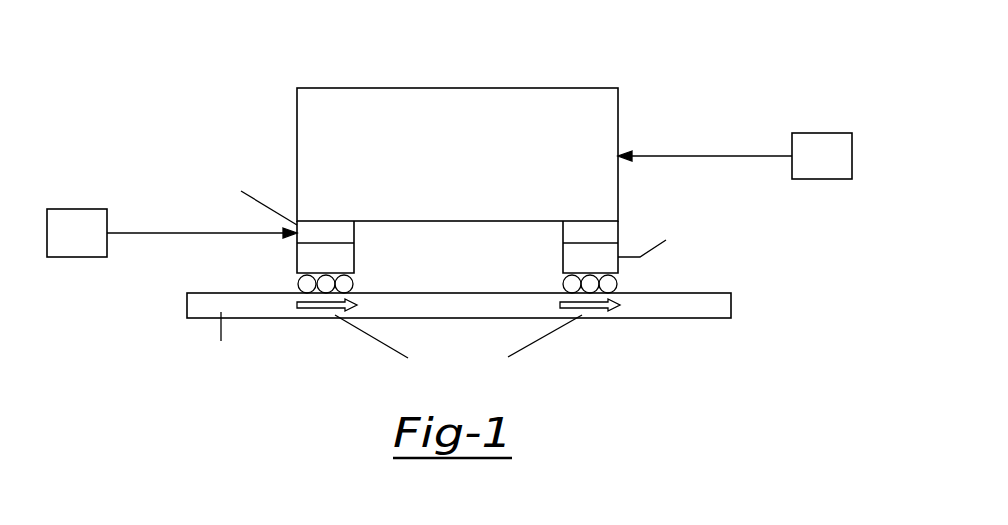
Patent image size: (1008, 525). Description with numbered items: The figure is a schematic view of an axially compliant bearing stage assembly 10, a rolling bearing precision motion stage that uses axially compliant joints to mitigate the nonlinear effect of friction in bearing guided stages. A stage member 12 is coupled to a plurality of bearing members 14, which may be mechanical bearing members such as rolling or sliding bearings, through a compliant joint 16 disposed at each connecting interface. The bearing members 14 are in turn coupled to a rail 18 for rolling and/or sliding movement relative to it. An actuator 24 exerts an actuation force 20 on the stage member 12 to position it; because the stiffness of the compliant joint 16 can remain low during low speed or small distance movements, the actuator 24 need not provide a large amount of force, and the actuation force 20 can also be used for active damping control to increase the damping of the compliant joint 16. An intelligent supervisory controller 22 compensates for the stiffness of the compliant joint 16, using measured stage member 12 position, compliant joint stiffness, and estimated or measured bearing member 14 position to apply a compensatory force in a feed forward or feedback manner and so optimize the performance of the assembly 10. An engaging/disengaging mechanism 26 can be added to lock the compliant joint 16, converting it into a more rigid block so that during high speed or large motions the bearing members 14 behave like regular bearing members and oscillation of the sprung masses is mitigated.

The axially compliant bearing stage assembly 10 is at (621, 59).
The stage member 12 is at (312, 88).
The bearing member 14 is at (297, 257).
The compliant joint 16 is at (165, 140).
The rail 18 is at (680, 319).
The actuation force 20 is at (783, 157).
The intelligent supervisory controller 22 is at (77, 209).
The actuator 24 is at (823, 133).
The engaging/disengaging mechanism 26 is at (354, 232).